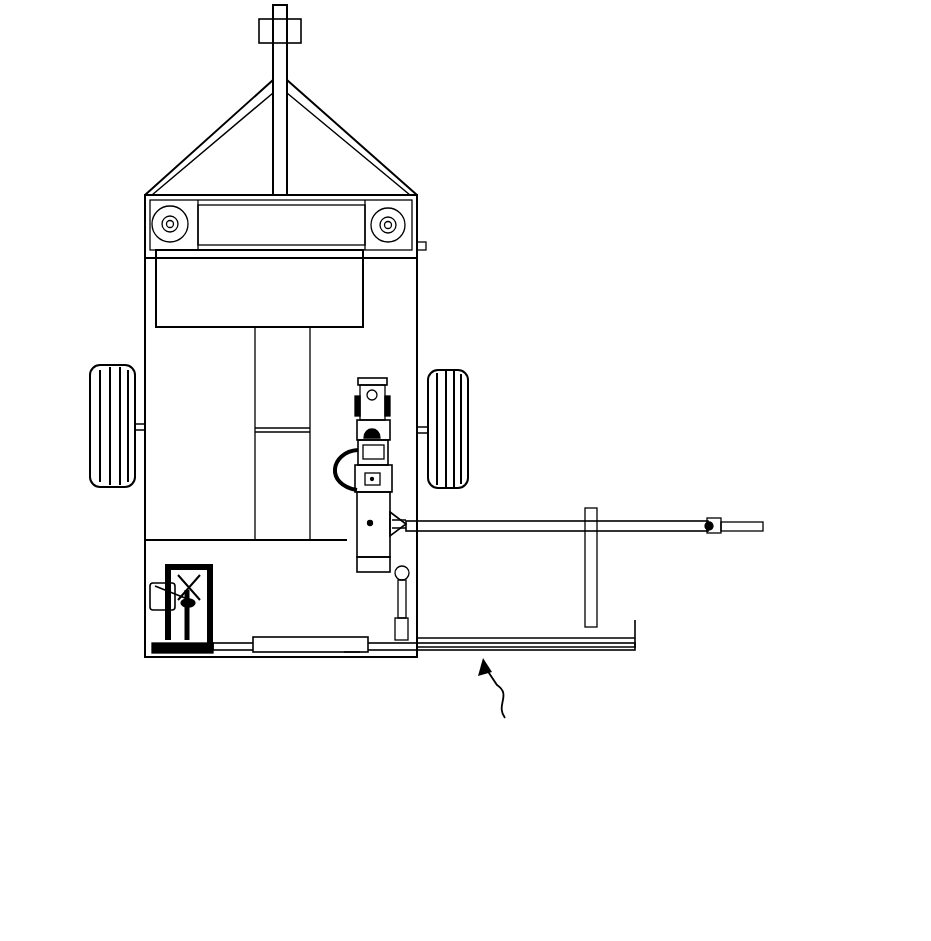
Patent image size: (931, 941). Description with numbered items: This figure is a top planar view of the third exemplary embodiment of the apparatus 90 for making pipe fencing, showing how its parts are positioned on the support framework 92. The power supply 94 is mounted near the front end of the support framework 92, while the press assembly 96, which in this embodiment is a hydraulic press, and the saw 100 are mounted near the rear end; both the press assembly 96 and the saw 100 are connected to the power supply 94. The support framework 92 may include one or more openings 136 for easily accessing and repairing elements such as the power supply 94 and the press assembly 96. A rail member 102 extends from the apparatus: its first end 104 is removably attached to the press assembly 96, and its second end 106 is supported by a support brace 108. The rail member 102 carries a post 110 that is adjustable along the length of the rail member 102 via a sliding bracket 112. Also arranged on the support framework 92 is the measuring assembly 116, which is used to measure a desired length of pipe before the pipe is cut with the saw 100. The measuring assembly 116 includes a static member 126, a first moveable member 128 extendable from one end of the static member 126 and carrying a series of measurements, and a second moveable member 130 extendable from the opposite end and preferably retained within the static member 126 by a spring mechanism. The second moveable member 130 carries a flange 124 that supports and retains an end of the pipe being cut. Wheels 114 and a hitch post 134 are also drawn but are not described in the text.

The apparatus for making pipe fencing 90 is at (522, 124).
The support framework 92 is at (406, 338).
The power supply 94 is at (363, 290).
The press assembly 96 is at (392, 470).
The saw 100 is at (150, 590).
The rail member 102 is at (523, 528).
The first end 104 is at (412, 530).
The second end 106 is at (765, 533).
The support brace 108 is at (595, 565).
The post 110 is at (712, 520).
The sliding bracket 112 is at (723, 533).
The wheels 114 is at (95, 400).
The measuring assembly 116 is at (352, 664).
The flange 124 is at (635, 625).
The static member 126 is at (290, 655).
The first moveable member 128 is at (173, 657).
The second moveable member 130 is at (530, 648).
The hitch post 134 is at (301, 30).
The openings 136 is at (277, 484).